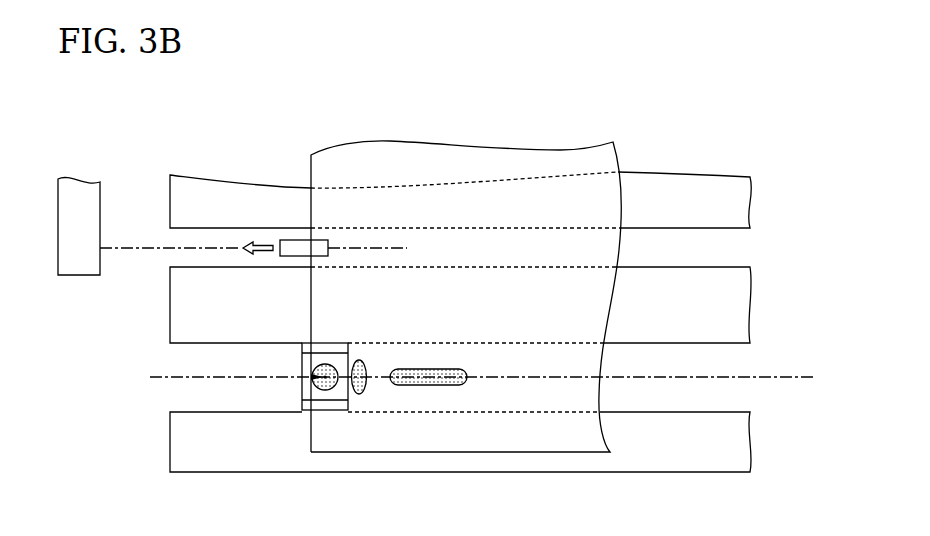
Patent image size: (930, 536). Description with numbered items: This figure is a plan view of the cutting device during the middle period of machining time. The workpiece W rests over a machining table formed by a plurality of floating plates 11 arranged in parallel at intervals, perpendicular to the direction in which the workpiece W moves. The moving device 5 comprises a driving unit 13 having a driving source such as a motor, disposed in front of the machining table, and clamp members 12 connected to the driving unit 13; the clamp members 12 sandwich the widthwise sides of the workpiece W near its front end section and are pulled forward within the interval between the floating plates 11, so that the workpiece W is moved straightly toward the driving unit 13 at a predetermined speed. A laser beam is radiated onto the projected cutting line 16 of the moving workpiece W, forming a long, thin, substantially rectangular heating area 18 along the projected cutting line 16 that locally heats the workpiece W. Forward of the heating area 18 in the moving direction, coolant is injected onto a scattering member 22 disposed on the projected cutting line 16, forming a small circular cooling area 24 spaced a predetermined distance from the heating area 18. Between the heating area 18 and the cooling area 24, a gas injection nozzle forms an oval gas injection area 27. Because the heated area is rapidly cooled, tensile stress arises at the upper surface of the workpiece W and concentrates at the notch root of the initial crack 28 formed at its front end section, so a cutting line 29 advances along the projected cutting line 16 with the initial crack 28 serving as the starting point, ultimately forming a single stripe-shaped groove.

The moving device 5 is at (60, 294).
The floating plates 11 is at (185, 207).
The clamp members 12 is at (288, 244).
The driving unit 13 is at (95, 273).
The workpiece W is at (518, 163).
The projected cutting line 16 is at (807, 379).
The heating area 18 is at (455, 386).
The scattering member 22 is at (310, 363).
The cooling area 24 is at (333, 390).
The gas injection area 27 is at (367, 387).
The initial crack 28 is at (318, 397).
The cutting line 29 is at (327, 391).